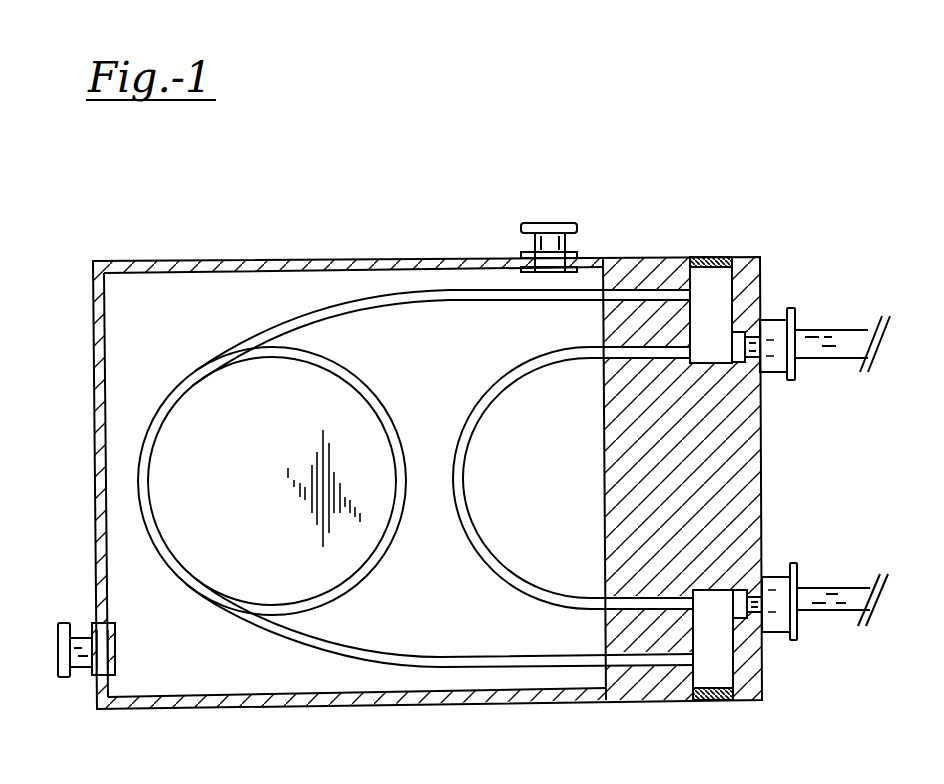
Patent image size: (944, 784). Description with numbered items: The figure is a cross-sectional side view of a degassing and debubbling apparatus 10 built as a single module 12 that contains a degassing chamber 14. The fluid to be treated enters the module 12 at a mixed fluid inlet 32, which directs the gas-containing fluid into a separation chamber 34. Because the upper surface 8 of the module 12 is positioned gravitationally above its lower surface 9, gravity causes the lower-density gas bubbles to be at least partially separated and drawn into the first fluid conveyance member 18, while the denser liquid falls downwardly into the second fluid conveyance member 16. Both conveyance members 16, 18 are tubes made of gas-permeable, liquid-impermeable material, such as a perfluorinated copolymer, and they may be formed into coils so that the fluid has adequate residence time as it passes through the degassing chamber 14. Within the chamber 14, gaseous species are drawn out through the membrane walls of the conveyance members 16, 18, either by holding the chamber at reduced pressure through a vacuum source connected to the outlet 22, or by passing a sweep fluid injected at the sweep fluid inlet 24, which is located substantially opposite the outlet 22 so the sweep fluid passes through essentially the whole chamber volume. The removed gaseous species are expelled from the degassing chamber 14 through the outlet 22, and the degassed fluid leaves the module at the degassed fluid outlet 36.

The upper surface 8 is at (668, 257).
The lower surface 9 is at (662, 700).
The degassing and debubbling apparatus 10 is at (413, 226).
The module 12 is at (121, 259).
The degassing chamber 14 is at (438, 396).
The second fluid conveyance member 16 is at (415, 657).
The first fluid conveyance member 18 is at (482, 512).
The outlet 22 is at (63, 626).
The sweep fluid inlet 24 is at (573, 214).
The mixed fluid inlet 32 is at (817, 618).
The separation chamber 34 is at (690, 586).
The degassed fluid outlet 36 is at (814, 331).